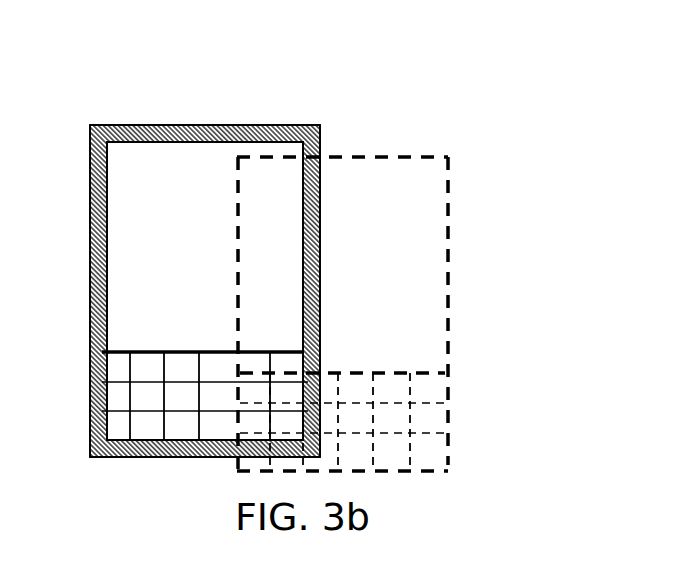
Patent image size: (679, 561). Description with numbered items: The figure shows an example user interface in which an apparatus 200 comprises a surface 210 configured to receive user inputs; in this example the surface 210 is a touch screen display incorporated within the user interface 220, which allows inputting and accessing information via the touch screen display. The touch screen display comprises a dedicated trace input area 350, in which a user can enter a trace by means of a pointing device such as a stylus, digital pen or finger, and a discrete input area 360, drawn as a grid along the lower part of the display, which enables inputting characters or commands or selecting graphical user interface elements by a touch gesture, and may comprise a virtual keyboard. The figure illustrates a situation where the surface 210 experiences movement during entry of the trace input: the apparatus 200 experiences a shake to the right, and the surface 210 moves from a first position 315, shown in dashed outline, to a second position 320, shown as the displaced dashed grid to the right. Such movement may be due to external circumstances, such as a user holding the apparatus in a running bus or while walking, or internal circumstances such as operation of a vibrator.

The apparatus 200 is at (203, 124).
The surface 210 is at (127, 242).
The user interface 220 is at (205, 291).
The first position 315 is at (320, 132).
The second position 320 is at (447, 473).
The dedicated trace input area 350 is at (205, 291).
The discrete input area 360 is at (115, 363).